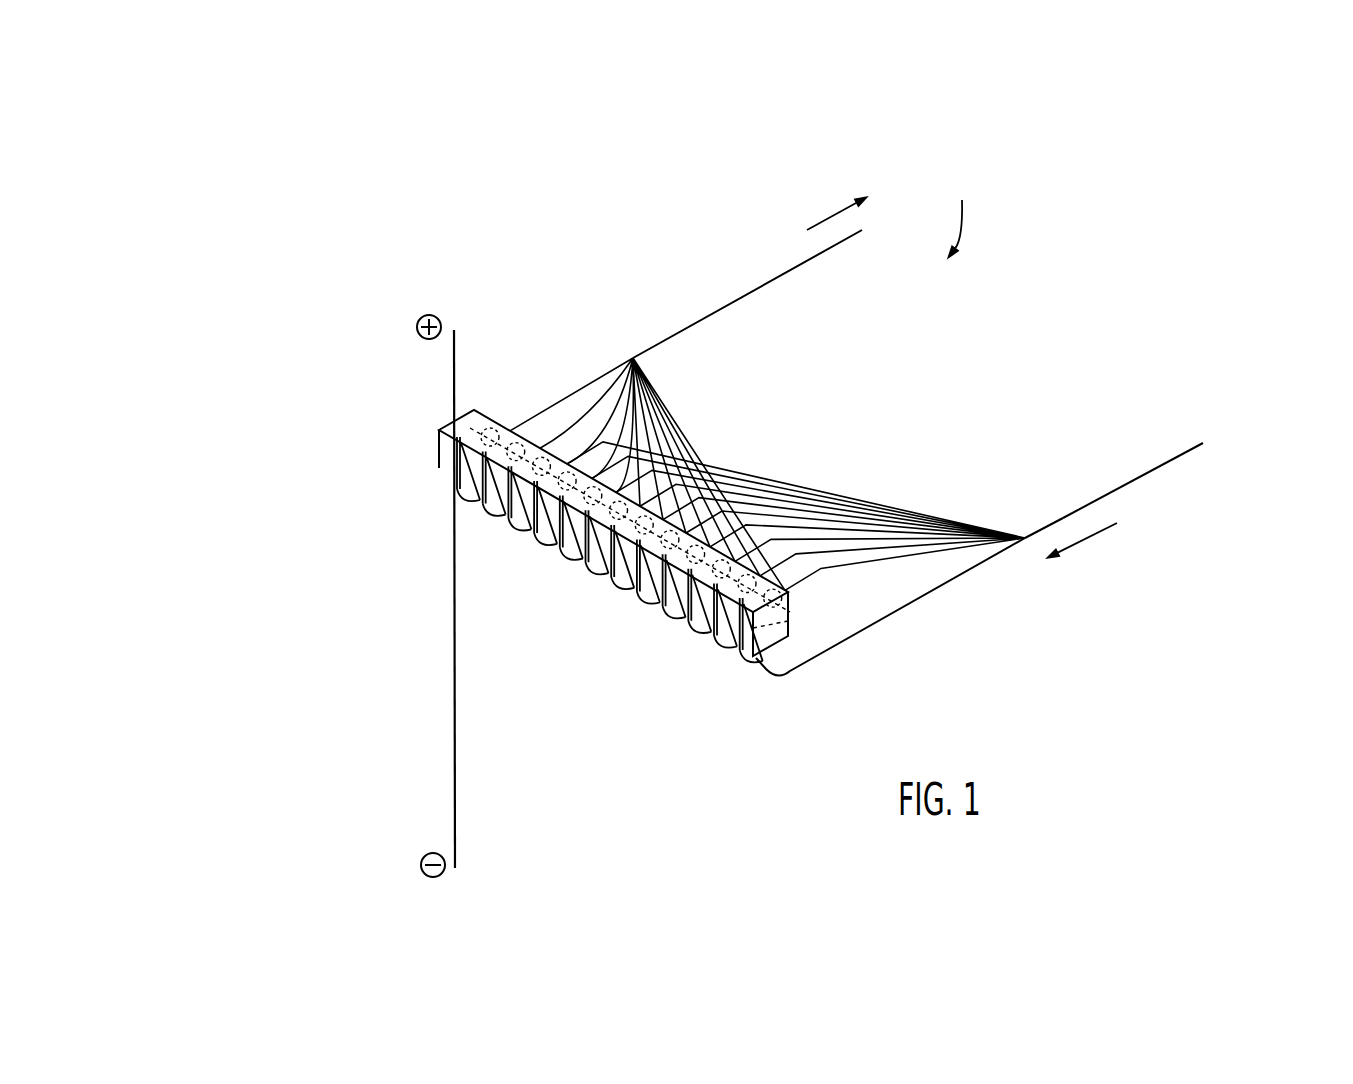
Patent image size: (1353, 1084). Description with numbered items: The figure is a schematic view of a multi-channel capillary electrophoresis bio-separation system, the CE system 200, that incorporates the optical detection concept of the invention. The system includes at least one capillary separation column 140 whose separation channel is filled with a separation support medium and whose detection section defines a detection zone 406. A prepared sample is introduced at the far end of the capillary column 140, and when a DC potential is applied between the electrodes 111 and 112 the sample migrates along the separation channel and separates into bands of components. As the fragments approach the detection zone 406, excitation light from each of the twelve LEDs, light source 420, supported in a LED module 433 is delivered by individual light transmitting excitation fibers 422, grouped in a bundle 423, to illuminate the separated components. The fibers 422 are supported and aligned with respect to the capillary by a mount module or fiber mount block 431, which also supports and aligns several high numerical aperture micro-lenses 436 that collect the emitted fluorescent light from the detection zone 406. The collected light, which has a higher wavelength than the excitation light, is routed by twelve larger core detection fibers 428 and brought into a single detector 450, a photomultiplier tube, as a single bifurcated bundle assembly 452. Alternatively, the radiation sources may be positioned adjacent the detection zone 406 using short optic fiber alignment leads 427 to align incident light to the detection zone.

The electrode 111 is at (416, 327).
The electrode 112 is at (420, 865).
The capillary separation column 140 is at (440, 602).
The multi-channel CE system 200 is at (958, 211).
The detection zone 406 is at (431, 465).
The light source (LED) 420 is at (1155, 541).
The excitation fiber 422 is at (943, 588).
The bundle 423 is at (1063, 518).
The short optic fiber alignment lead 427 is at (816, 659).
The detection fiber 428 is at (683, 432).
The fiber mount block 431 is at (426, 438).
The LED module 433 is at (1044, 528).
The micro-lens 436 is at (489, 438).
The detector 450 is at (661, 326).
The bifurcated bundle assembly 452 is at (747, 294).